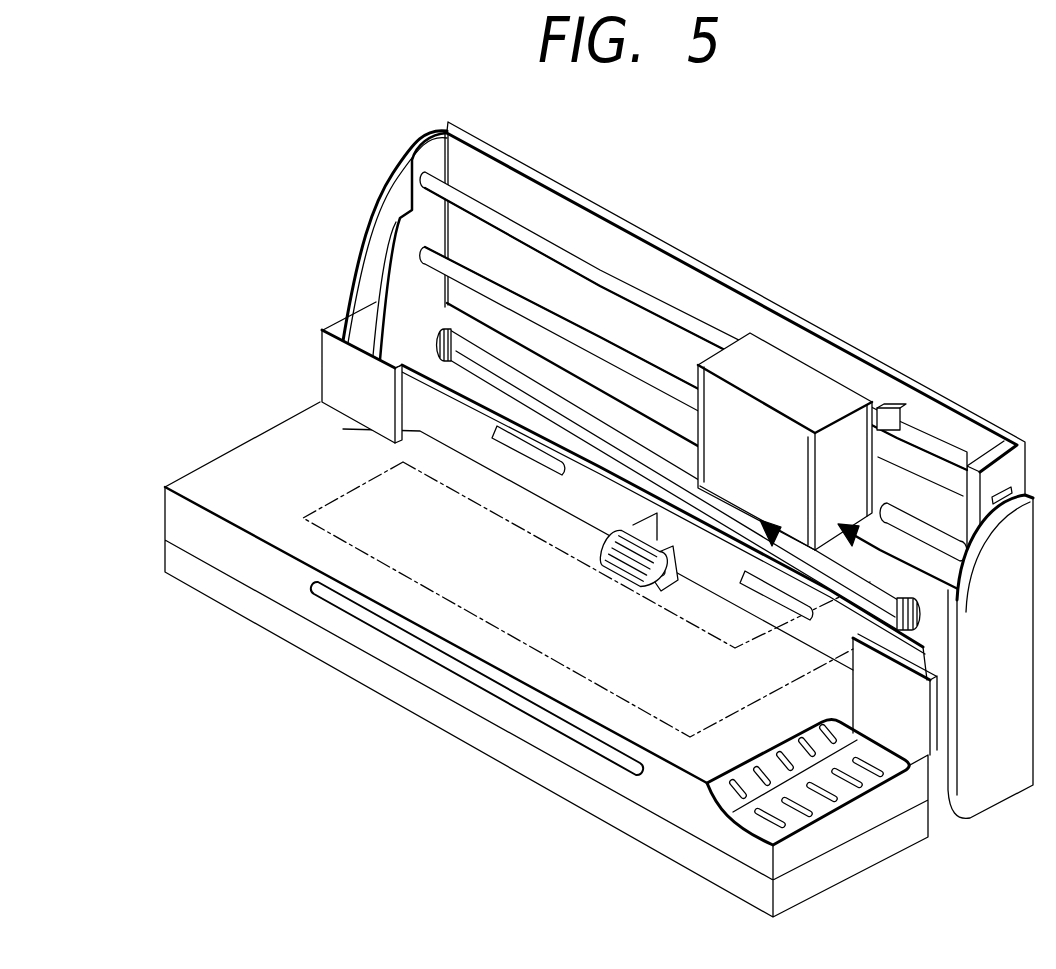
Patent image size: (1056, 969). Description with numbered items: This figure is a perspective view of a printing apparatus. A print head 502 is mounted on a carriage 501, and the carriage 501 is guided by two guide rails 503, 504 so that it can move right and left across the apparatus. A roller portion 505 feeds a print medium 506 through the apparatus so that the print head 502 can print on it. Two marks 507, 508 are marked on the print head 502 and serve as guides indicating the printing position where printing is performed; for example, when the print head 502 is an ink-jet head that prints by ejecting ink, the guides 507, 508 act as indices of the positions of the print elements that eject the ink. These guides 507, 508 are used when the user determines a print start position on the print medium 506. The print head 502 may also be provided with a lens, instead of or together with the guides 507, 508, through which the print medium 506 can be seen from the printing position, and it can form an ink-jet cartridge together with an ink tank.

The carriage 501 is at (890, 468).
The print head 502 is at (753, 408).
The guide rail 503 is at (478, 270).
The guide rail 504 is at (587, 268).
The roller portion 505 is at (440, 344).
The print medium 506 is at (585, 668).
The mark (guide) 507 is at (848, 524).
The mark (guide) 508 is at (770, 540).